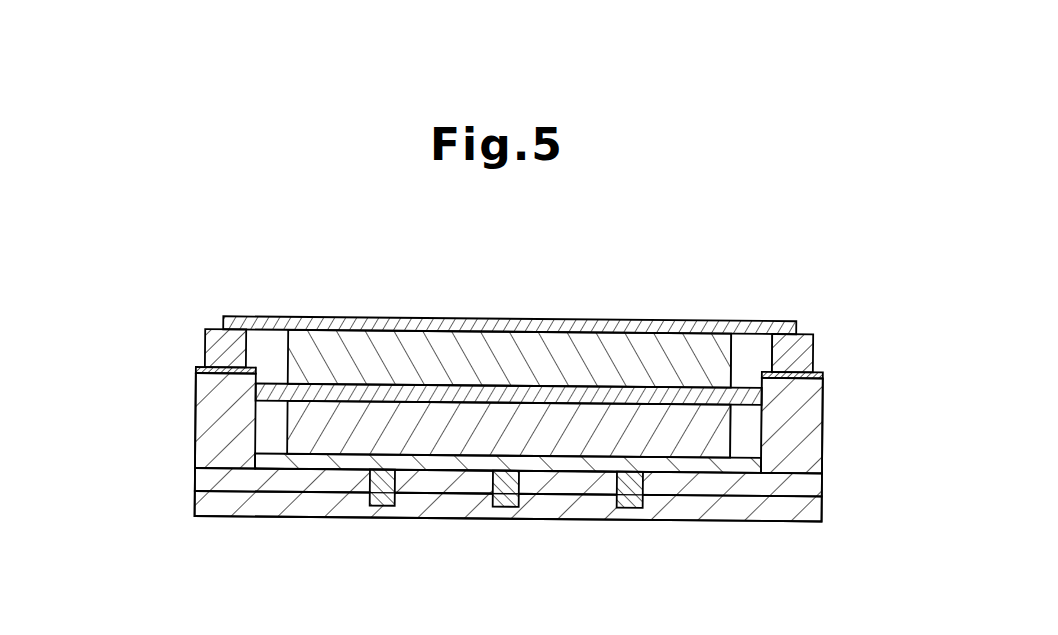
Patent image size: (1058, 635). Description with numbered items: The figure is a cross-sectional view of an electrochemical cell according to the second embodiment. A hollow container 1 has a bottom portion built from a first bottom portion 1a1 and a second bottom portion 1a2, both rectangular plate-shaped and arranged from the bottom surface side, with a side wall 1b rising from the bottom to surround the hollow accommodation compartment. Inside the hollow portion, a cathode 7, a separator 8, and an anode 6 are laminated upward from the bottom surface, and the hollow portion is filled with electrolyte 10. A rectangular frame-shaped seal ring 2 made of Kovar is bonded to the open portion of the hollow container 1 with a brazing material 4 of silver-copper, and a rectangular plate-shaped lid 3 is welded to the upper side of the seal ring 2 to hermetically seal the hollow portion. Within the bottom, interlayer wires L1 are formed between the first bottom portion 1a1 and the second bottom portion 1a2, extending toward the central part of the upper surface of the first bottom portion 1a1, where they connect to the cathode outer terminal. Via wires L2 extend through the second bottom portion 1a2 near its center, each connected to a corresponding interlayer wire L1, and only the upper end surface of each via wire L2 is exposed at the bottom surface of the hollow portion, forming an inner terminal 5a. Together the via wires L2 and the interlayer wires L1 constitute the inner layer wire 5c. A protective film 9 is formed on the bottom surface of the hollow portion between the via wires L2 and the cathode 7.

The hollow container 1 is at (123, 416).
The first bottom portion 1a1 is at (195, 507).
The second bottom portion 1a2 is at (195, 477).
The side wall portion of substrate 1b is at (194, 440).
The seal ring 2 is at (204, 330).
The lid 3 is at (650, 320).
The brazing material 4 is at (195, 367).
The inner terminal 5a is at (620, 455).
The inner layer wire 5c is at (518, 562).
The anode 6 is at (517, 333).
The cathode 7 is at (722, 449).
The separator 8 is at (371, 392).
The protective film 9 is at (733, 474).
The electrolyte 10 is at (754, 337).
The interlayer wire L1 is at (380, 505).
The via wire L2 is at (490, 485).